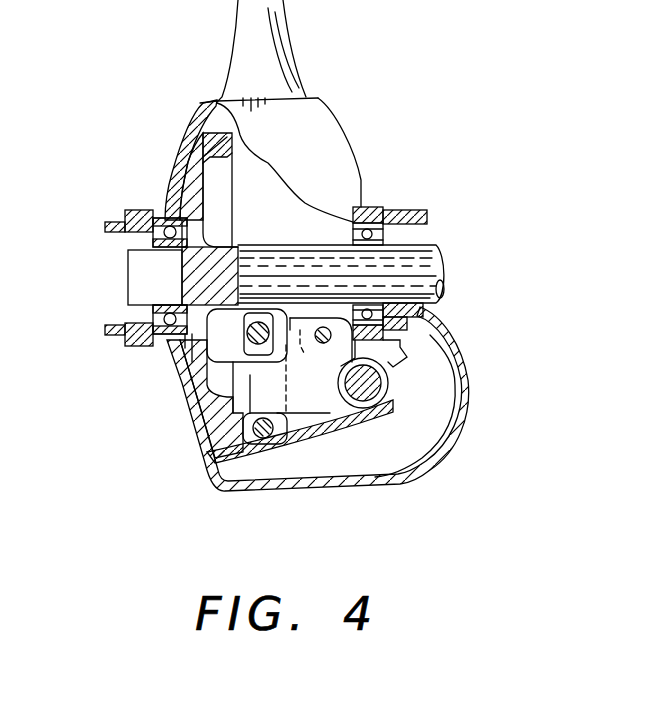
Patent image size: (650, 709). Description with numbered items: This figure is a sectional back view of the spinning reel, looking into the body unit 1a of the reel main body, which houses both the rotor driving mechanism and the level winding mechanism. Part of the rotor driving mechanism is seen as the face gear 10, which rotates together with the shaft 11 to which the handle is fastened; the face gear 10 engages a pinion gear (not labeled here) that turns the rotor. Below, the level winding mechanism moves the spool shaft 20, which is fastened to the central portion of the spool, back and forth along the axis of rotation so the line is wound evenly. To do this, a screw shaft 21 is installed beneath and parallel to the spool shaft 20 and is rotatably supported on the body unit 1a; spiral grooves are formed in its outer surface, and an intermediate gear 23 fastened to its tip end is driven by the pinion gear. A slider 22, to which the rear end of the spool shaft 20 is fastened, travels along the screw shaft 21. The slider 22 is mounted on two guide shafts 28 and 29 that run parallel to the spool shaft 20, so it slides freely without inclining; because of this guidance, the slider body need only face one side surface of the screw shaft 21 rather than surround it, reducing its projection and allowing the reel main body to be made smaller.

The face gear 10 is at (214, 140).
The body unit 1a is at (176, 173).
The shaft 11 is at (423, 280).
The guide shaft 28 is at (321, 328).
The intermediate gear 23 is at (430, 368).
The screw shaft 21 is at (382, 388).
The slider 22 is at (318, 400).
The guide shaft 29 is at (325, 402).
The spool shaft 20 is at (252, 333).